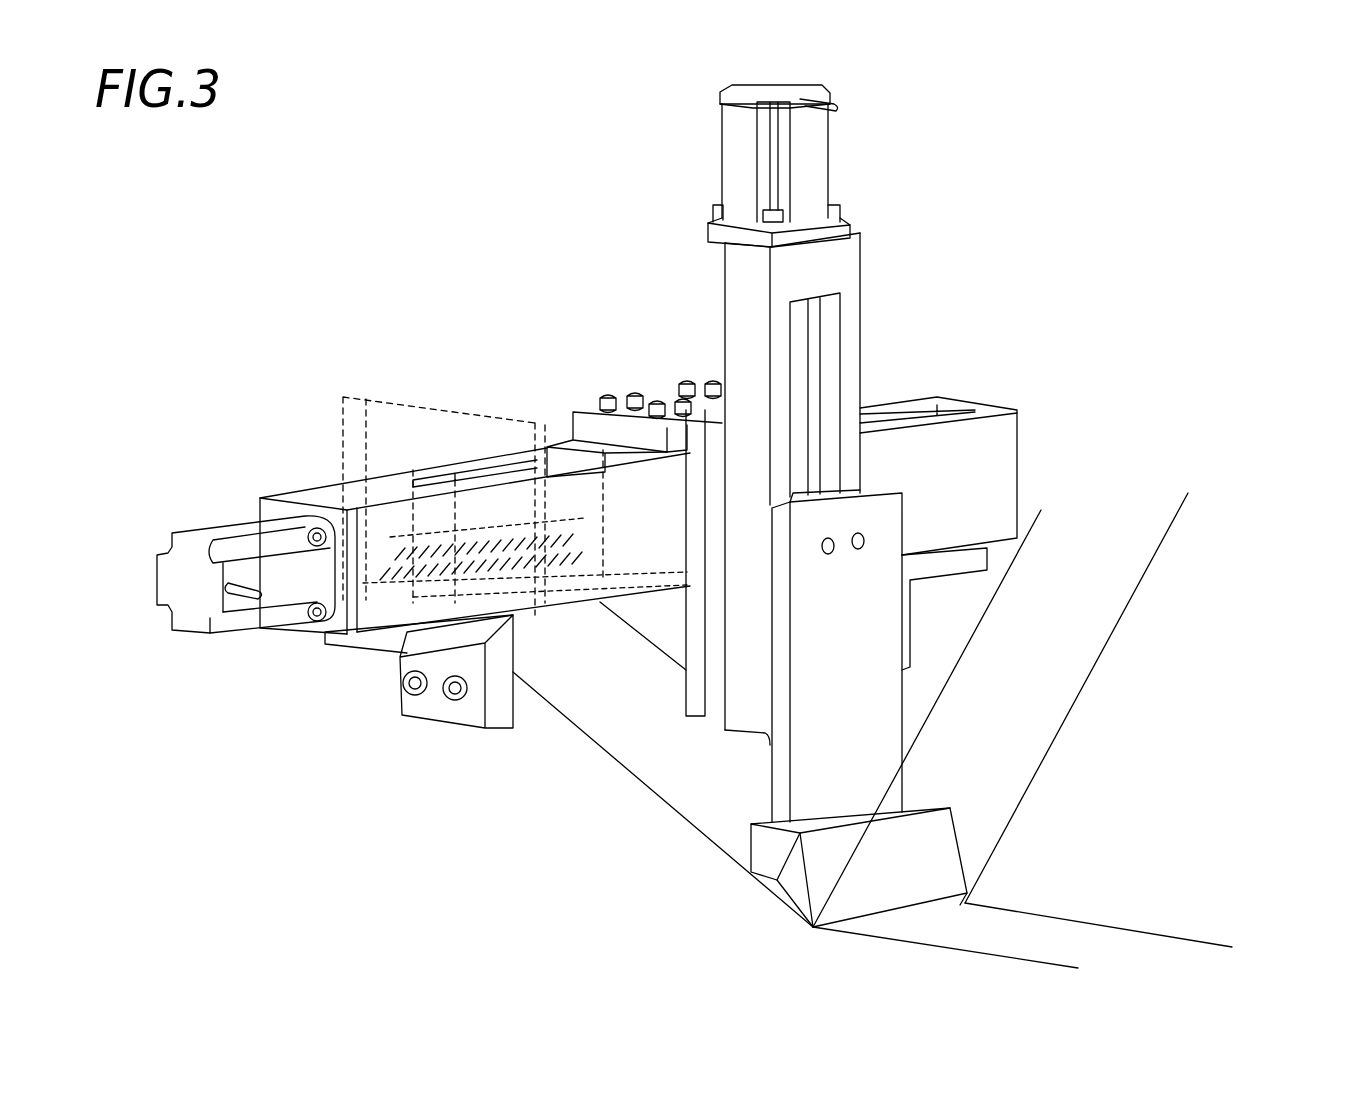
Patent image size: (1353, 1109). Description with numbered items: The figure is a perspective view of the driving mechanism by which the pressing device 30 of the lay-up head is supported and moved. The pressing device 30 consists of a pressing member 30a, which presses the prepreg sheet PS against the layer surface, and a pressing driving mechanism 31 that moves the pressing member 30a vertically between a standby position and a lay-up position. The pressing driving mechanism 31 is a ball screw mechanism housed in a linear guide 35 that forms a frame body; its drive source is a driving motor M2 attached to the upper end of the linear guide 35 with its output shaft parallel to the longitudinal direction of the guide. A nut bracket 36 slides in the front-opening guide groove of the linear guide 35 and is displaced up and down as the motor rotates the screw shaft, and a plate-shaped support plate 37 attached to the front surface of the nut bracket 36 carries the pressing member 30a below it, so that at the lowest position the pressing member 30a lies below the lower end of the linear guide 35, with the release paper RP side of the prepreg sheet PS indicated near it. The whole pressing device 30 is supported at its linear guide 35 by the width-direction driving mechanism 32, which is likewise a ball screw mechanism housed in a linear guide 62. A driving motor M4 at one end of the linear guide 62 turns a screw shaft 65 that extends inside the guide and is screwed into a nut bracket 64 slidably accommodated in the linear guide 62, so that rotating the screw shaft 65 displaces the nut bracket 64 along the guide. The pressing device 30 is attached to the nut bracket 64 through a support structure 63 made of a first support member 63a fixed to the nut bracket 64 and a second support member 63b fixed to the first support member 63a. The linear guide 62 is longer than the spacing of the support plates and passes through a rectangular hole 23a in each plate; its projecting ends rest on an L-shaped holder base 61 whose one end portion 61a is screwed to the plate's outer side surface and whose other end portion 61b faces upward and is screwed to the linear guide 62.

The pressing device 30 is at (1032, 248).
The pressing member 30a is at (800, 905).
The pressing driving mechanism 31 is at (883, 245).
The width-direction driving mechanism 32 is at (199, 468).
The linear guide 35 is at (733, 300).
The nut bracket 36 is at (820, 492).
The support plate 37 is at (948, 540).
The holder base 61 is at (405, 905).
The one end portion 61a is at (417, 717).
The other end portion 61b is at (353, 647).
The linear guide 62 is at (333, 490).
The support structure 63 is at (610, 273).
The first support member 63a is at (597, 405).
The second support member 63b is at (677, 392).
The nut bracket 64 is at (553, 447).
The screw shaft 65 is at (525, 510).
The rectangular hole 23a is at (420, 396).
The driving motor M2 is at (727, 162).
The driving motor M4 is at (172, 547).
The release paper RP is at (1052, 750).
The prepreg sheet PS is at (1128, 942).